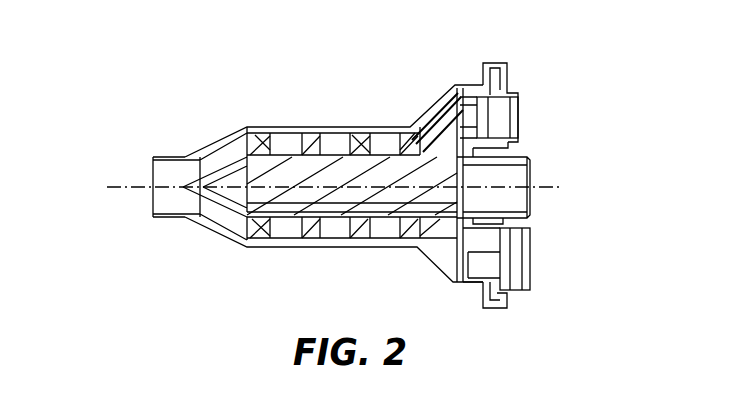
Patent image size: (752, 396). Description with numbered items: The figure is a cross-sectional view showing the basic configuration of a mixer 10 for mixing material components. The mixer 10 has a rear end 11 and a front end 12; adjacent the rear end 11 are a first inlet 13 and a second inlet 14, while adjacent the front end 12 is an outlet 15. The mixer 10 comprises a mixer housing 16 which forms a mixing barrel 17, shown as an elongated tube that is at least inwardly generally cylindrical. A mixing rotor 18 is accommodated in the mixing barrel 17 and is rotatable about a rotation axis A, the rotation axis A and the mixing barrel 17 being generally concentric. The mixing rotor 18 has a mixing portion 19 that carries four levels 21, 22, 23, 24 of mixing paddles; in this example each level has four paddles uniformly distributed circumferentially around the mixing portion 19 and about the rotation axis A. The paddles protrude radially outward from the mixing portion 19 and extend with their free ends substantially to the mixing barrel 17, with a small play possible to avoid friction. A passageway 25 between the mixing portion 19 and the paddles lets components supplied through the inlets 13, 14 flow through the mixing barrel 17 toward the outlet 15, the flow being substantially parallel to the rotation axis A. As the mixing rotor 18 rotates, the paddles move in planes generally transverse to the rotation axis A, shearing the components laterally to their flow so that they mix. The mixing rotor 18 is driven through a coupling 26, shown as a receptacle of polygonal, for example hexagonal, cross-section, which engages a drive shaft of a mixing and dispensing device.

The mixer 10 is at (180, 90).
The rear end 11 is at (547, 282).
The front end 12 is at (135, 241).
The first inlet 13 is at (520, 123).
The second inlet 14 is at (523, 260).
The outlet 15 is at (146, 201).
The mixer housing 16 is at (463, 285).
The mixing barrel 17 is at (353, 228).
The mixing rotor 18 is at (398, 182).
The mixing portion 19 is at (282, 175).
The level of mixing paddles 21 is at (412, 133).
The level of mixing paddles 22 is at (357, 148).
The level of mixing paddles 23 is at (318, 150).
The level of mixing paddles 24 is at (262, 146).
The passageway 25 is at (278, 228).
The coupling 26 is at (530, 176).
The rotation axis A is at (127, 185).